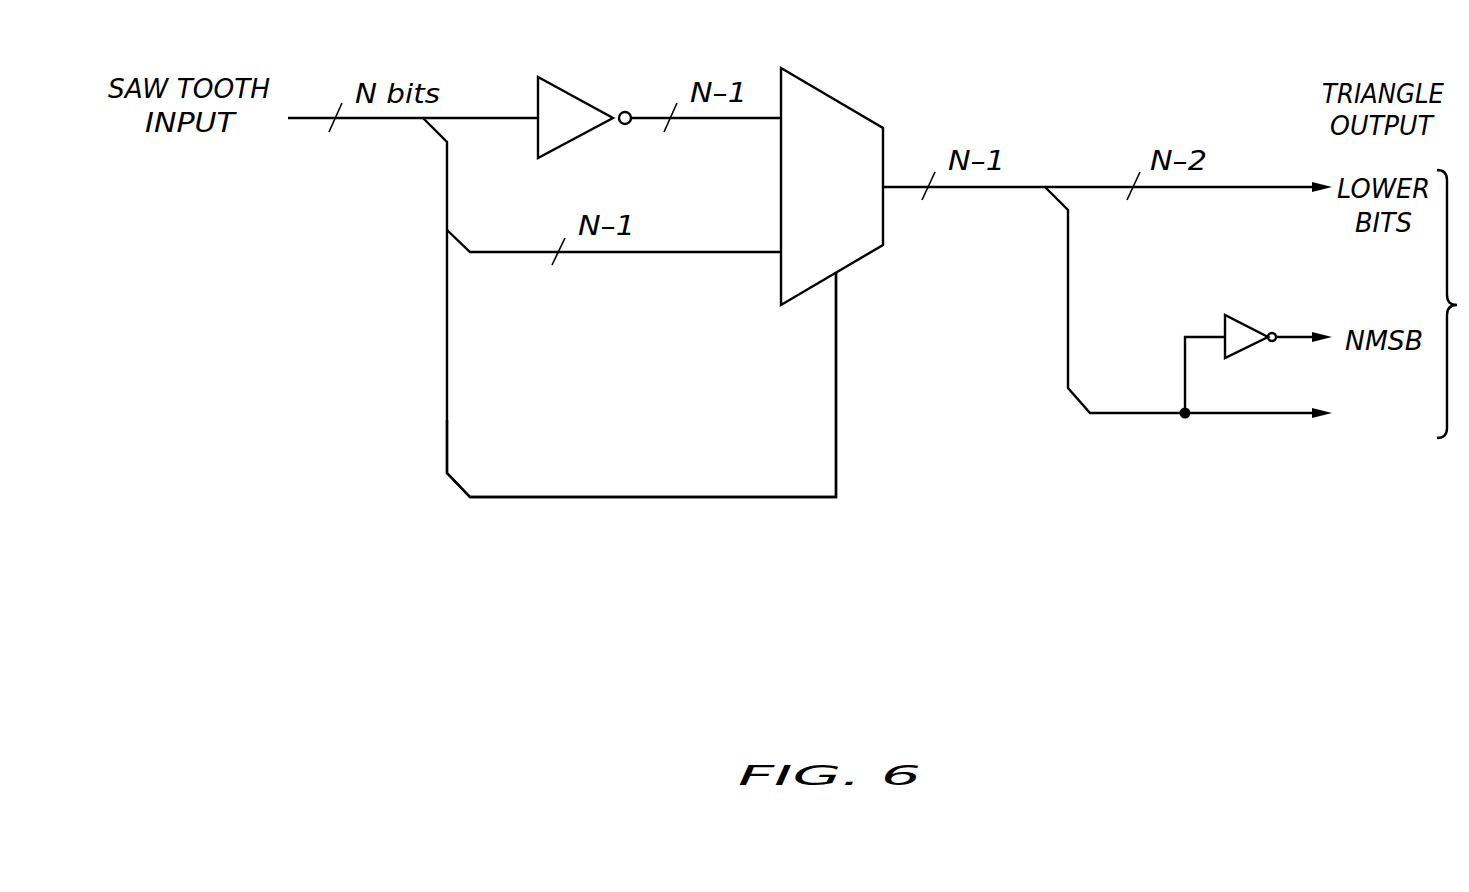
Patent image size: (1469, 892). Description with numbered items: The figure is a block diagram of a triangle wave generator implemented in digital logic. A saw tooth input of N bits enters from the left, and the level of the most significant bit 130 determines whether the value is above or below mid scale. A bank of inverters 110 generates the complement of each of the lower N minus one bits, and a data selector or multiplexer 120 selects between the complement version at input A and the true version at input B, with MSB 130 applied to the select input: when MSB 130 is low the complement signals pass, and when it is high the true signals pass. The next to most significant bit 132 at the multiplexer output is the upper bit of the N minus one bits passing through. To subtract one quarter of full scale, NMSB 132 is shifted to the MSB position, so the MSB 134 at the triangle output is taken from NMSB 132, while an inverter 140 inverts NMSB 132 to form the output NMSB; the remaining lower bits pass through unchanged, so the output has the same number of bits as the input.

The bank of inverters 110 is at (570, 102).
The multiplexer 120 is at (823, 105).
The most significant bit 130 is at (680, 497).
The next to most significant bit 132 is at (1145, 418).
The MSB at the triangle output 134 is at (1370, 442).
The inverter 140 is at (1250, 323).